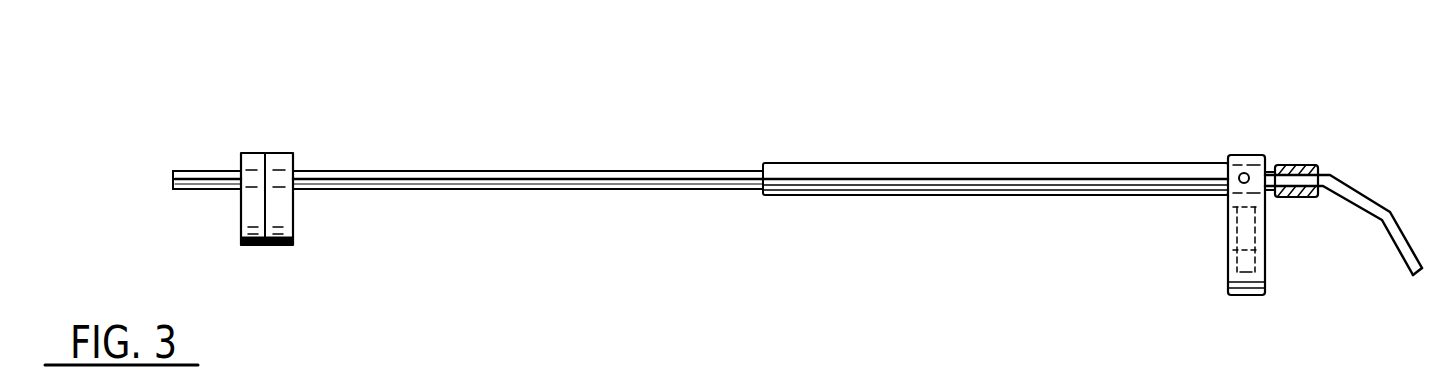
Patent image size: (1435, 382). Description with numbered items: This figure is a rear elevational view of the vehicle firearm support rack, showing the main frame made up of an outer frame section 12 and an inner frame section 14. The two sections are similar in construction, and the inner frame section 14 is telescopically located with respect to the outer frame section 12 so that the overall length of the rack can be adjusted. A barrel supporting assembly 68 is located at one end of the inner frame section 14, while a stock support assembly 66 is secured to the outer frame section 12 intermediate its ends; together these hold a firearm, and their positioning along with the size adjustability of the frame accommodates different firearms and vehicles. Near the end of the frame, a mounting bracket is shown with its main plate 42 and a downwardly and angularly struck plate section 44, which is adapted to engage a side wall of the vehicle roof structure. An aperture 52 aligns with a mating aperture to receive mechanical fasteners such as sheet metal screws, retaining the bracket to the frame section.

The outer frame section 12 is at (823, 161).
The inner frame section 14 is at (490, 170).
The main plate 42 is at (1351, 185).
The plate section 44 is at (1395, 247).
The aperture 52 is at (1276, 172).
The stock support assembly 66 is at (1242, 150).
The barrel supporting assembly 68 is at (277, 148).